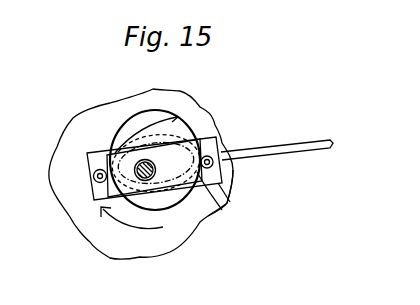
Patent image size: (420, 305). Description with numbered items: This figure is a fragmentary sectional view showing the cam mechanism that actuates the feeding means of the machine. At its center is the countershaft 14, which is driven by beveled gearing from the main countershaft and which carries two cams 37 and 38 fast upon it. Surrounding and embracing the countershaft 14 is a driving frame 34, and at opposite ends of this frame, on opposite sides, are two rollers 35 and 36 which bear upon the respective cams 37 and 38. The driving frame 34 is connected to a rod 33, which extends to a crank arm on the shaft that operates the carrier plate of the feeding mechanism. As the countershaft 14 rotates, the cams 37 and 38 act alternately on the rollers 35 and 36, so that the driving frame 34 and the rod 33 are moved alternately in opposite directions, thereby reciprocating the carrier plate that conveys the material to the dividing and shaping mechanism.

The countershaft 14 is at (140, 180).
The rod 33 is at (305, 150).
The driving frame 34 is at (225, 206).
The roller 35 is at (88, 152).
The roller 36 is at (214, 152).
The cam 37 is at (137, 135).
The cam 38 is at (185, 210).